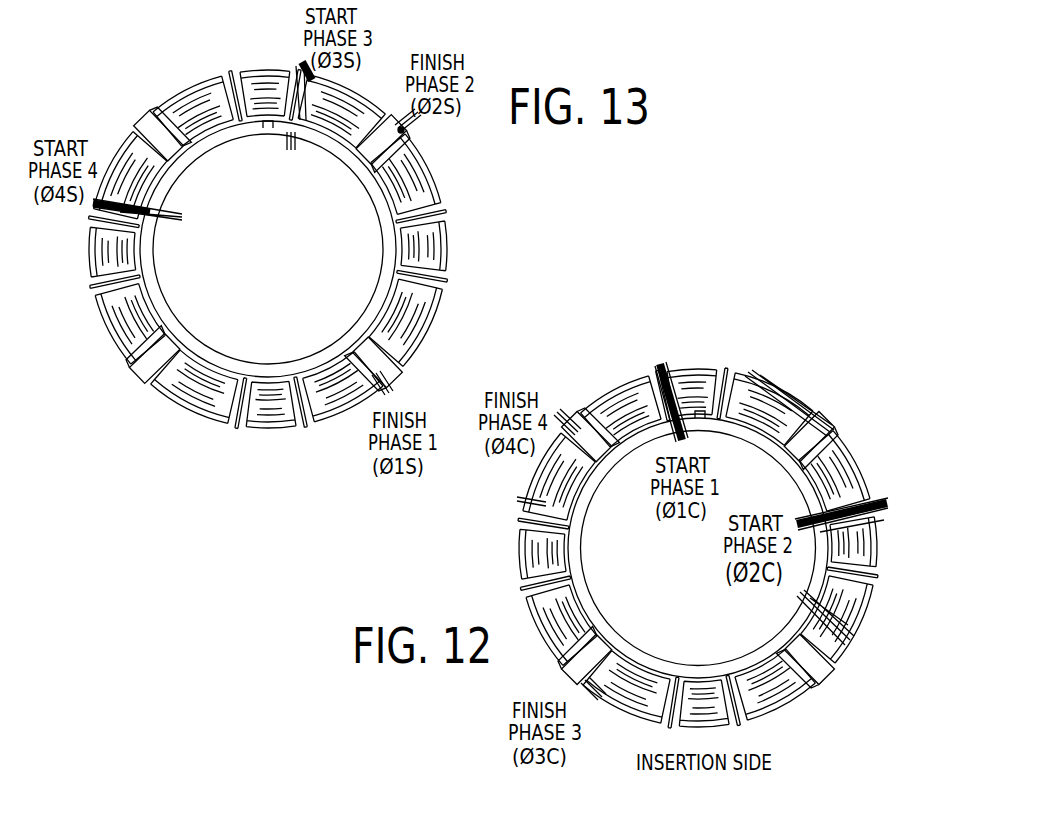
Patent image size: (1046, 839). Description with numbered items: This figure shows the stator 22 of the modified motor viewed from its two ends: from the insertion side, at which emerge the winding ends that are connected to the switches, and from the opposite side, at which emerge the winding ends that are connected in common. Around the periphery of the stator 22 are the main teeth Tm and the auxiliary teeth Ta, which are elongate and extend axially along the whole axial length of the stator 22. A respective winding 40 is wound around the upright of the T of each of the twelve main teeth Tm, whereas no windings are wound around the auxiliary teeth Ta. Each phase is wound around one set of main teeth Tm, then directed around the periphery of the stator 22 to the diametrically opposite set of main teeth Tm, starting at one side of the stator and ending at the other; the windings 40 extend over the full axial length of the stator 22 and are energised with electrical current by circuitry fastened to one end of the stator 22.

In FIG. 13, the stator 22 is at (272, 263).
In FIG. 12, the stator 22 is at (712, 534).
In FIG. 13, the auxiliary teeth Ta is at (153, 116).
In FIG. 12, the auxiliary teeth Ta is at (823, 407).
In FIG. 13, the main teeth Tm is at (230, 72).
In FIG. 12, the main teeth Tm is at (778, 374).
In FIG. 13, the winding 40 is at (255, 107).